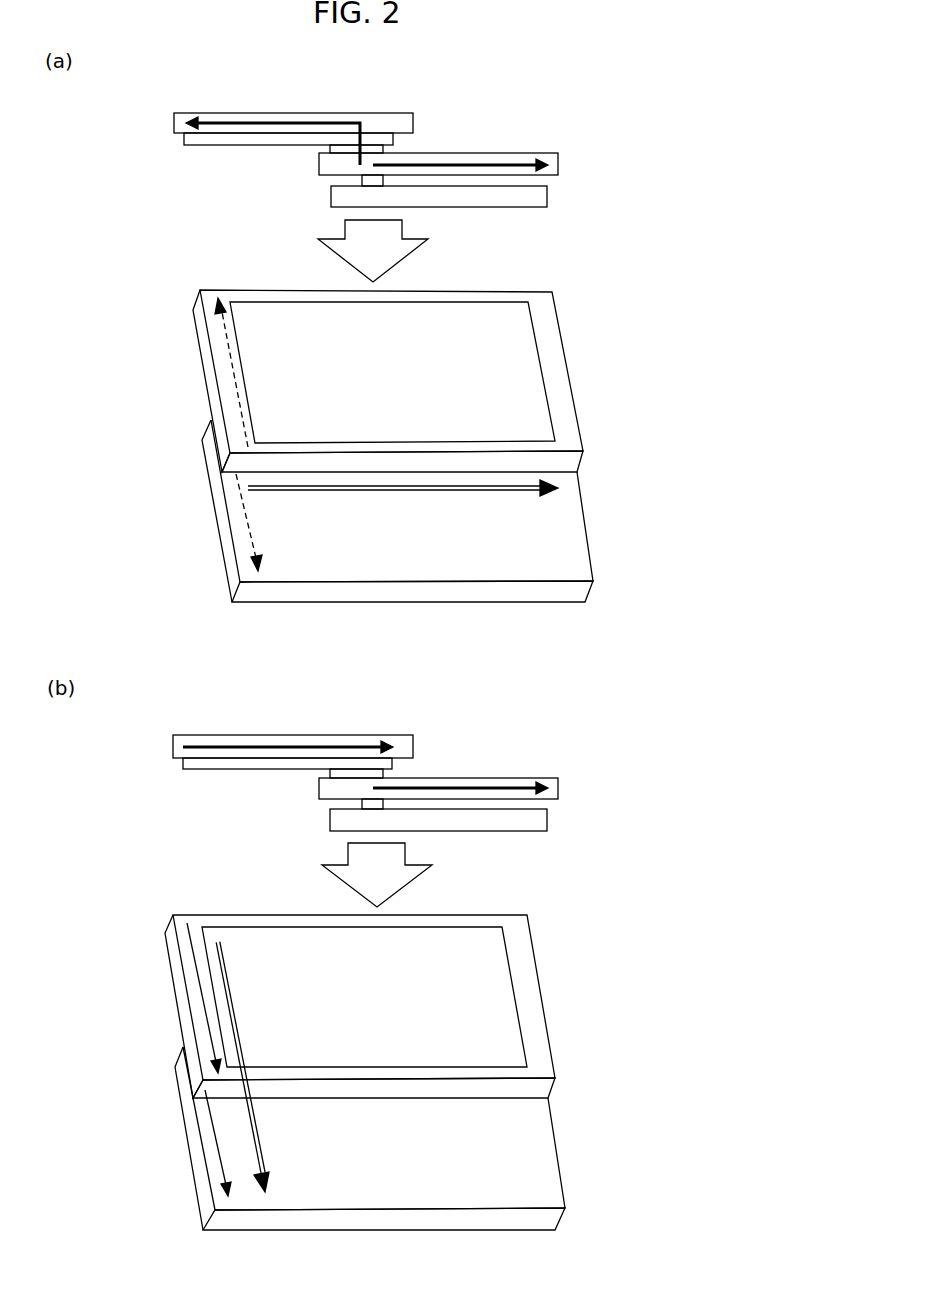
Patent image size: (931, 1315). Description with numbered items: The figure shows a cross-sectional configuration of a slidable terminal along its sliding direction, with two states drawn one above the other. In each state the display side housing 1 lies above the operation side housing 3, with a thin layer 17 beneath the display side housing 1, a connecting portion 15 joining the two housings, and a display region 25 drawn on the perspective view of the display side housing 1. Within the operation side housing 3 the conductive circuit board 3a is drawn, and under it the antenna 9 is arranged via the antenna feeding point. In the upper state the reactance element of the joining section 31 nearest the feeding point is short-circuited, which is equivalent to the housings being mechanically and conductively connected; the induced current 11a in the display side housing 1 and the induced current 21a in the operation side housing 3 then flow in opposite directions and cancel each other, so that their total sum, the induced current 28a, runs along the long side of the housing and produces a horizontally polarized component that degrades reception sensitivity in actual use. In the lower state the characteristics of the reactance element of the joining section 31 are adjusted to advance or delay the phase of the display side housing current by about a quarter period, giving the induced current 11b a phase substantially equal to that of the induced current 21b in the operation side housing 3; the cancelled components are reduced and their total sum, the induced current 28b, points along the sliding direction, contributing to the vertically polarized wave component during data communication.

The display side housing 1 is at (224, 113).
The operation side housing 3 is at (564, 152).
The conductive circuit board 3a is at (557, 155).
The antenna 9 is at (372, 195).
The hinge connecting portion 15 is at (385, 148).
The lower layer of first housing 17 is at (184, 140).
The display screen 25 is at (477, 310).
The joining section 31 is at (348, 153).
The induced current 11a is at (220, 133).
The induced current 21a is at (500, 158).
The induced current 28a is at (468, 491).
The induced current 11b is at (210, 752).
The induced current 21b is at (470, 783).
The induced current 28b is at (260, 1137).